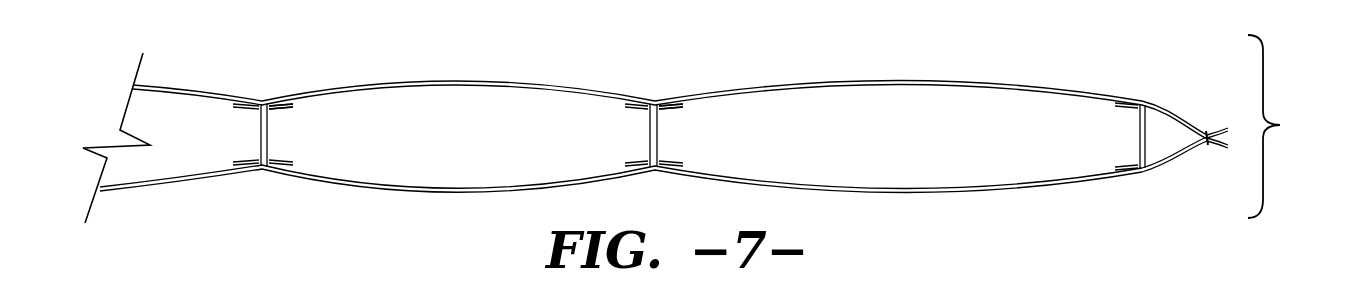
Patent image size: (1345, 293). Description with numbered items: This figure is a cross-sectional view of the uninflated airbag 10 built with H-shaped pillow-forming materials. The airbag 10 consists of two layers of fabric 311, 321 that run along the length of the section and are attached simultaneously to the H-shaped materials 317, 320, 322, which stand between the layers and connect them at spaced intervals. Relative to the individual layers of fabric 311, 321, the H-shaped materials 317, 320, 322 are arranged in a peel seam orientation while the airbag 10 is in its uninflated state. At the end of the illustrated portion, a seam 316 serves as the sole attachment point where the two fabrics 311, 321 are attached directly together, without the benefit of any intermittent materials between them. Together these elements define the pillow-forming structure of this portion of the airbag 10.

The airbag 10 is at (1285, 126).
The layer of fabric 311 is at (437, 83).
The layer of fabric 321 is at (428, 192).
The H-shaped material 320 is at (238, 100).
The H-shaped material 322 is at (287, 100).
The H-shaped material 317 is at (1122, 102).
The seam 316 is at (1208, 135).